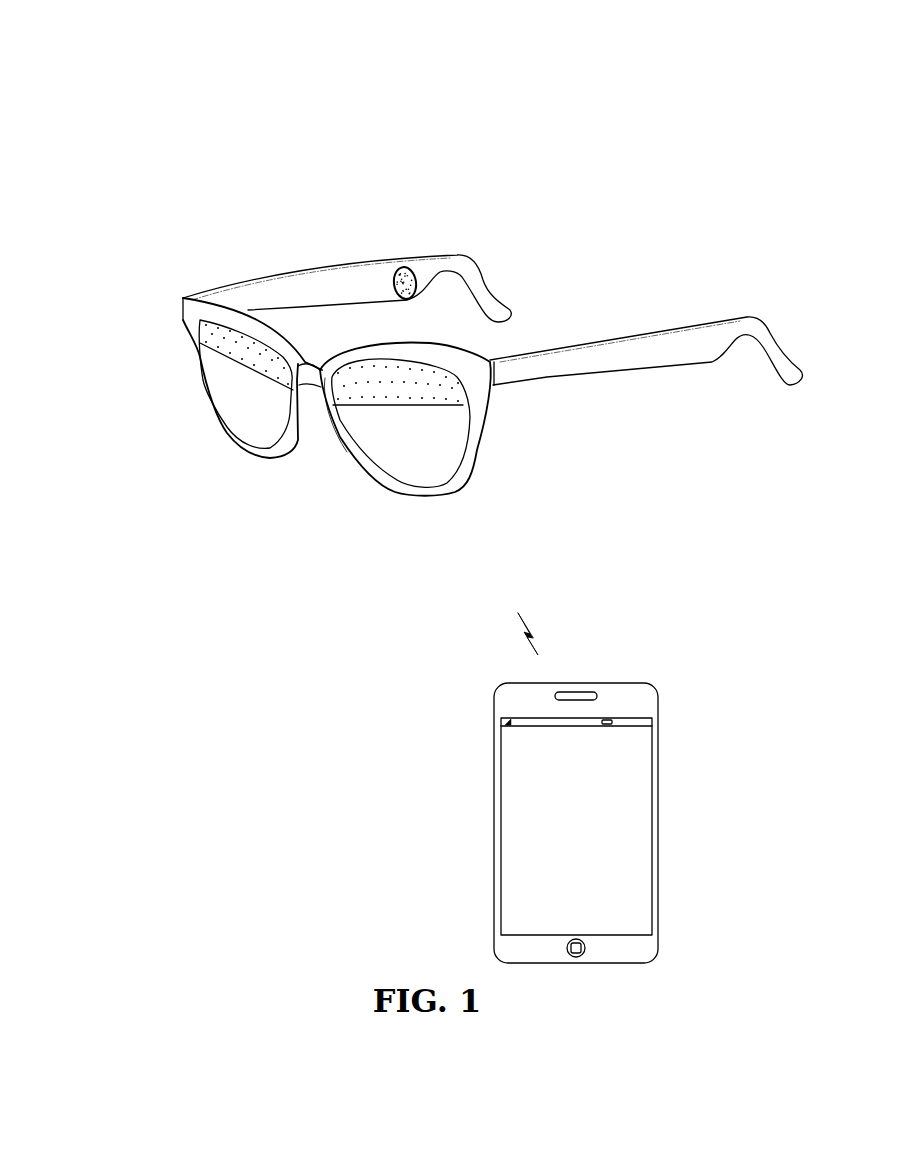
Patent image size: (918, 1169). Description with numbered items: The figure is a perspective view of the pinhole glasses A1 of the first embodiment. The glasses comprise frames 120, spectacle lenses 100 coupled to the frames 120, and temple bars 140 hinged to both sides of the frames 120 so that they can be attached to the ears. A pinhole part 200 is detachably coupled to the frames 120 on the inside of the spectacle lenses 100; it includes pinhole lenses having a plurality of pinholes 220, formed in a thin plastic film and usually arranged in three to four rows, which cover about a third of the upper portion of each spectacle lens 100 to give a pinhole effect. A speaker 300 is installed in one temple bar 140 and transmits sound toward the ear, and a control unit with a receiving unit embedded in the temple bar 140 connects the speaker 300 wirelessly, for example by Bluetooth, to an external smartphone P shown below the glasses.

The eyeglasses-type device A1 is at (535, 178).
The spectacle lens 100 is at (233, 390).
The frame 120 is at (250, 455).
The temple bar 140 is at (330, 262).
The pinhole part 200 is at (200, 343).
The pinhole 220 is at (187, 323).
The speaker 300 is at (417, 267).
The smartphone P is at (658, 817).